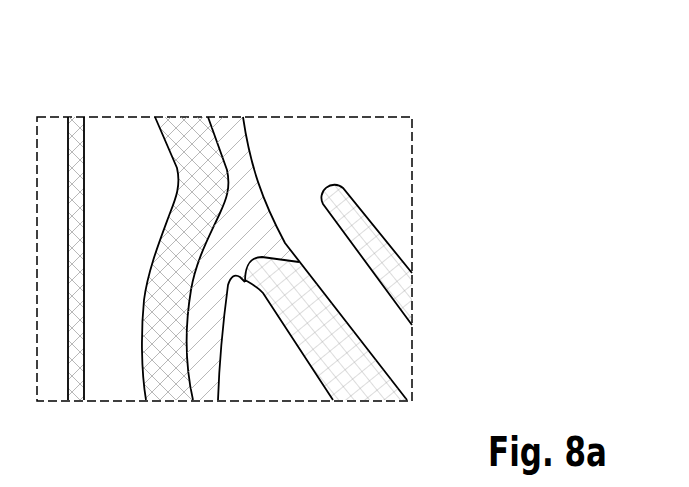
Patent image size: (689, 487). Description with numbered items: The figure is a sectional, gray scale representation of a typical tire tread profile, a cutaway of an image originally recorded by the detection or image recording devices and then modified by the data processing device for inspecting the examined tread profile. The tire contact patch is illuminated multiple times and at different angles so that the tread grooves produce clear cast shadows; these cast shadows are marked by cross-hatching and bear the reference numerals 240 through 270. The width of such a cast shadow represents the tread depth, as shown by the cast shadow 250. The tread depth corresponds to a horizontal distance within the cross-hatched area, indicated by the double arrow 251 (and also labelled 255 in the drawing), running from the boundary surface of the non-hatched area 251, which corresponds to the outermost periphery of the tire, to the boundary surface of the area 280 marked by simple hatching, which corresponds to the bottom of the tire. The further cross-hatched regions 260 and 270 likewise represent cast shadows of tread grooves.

The tread groove cast shadow 240 is at (75, 96).
The non-hatched area 251 is at (124, 96).
The cast shadow 250 is at (181, 96).
The membrane width 255 is at (213, 158).
The simply hatched area 280 is at (233, 96).
The tread groove cast shadow 260 is at (392, 419).
The tread groove cast shadow 270 is at (430, 310).